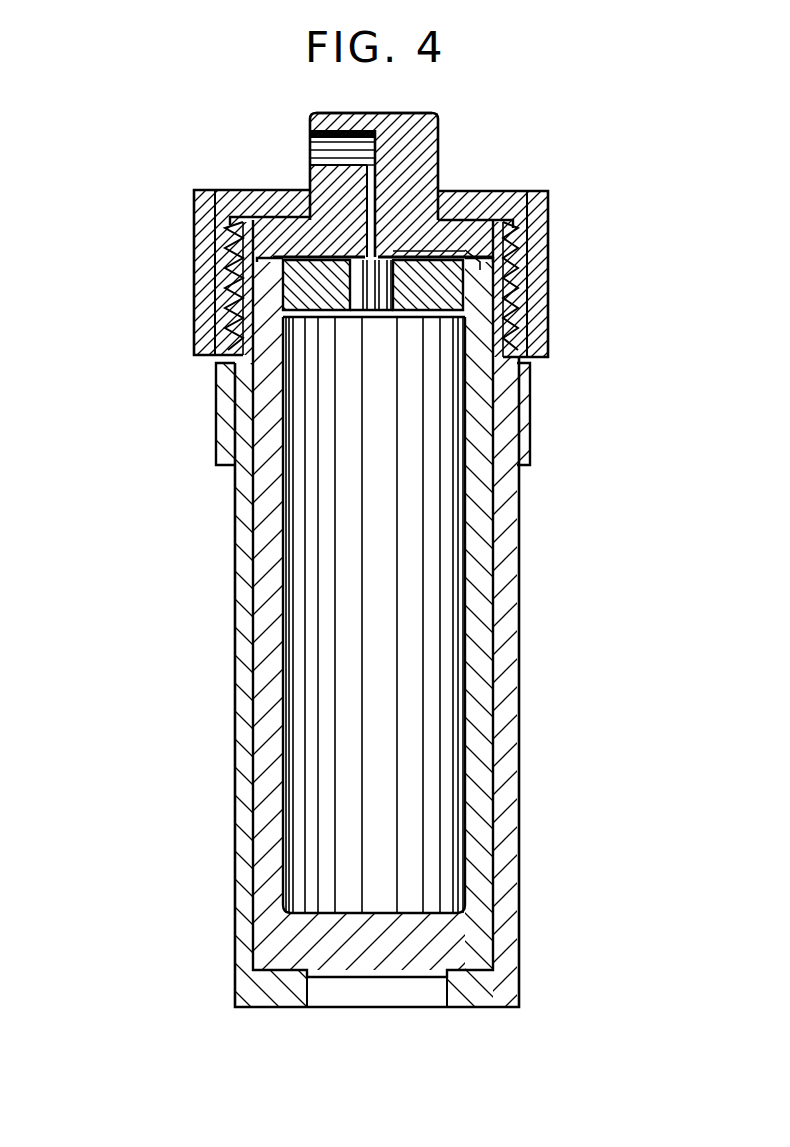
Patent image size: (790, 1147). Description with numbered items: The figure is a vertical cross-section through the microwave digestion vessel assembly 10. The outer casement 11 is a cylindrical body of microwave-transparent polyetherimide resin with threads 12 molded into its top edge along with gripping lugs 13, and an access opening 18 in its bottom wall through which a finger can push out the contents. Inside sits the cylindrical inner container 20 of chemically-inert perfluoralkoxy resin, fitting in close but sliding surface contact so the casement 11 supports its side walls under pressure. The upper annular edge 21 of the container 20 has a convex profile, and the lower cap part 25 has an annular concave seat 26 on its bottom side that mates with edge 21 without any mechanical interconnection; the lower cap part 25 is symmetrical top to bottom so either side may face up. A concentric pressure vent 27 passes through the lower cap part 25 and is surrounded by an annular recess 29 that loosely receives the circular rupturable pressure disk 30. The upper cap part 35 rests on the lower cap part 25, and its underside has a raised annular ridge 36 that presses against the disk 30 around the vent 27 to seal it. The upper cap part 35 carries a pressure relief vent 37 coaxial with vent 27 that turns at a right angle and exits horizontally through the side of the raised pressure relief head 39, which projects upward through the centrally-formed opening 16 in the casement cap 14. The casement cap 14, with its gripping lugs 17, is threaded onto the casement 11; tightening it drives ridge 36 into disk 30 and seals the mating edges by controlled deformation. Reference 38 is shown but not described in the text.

The vessel assembly 10 is at (208, 692).
The outer casement 11 is at (518, 645).
The threads 12 is at (540, 288).
The gripping lugs 13 is at (220, 453).
The casement cap 14 is at (263, 197).
The centrally-formed opening 16 is at (440, 165).
The gripping lugs 17 is at (203, 222).
The access opening 18 is at (447, 990).
The inner container 20 is at (480, 500).
The upper annular edge 21 is at (250, 343).
The lower cap part 25 is at (265, 283).
The annular concave seat 26 is at (228, 265).
The pressure vent 27 is at (488, 337).
The annular recess 29 is at (262, 205).
The pressure disk 30 is at (375, 300).
The upper cap part 35 is at (520, 237).
The annular ridge 36 is at (470, 250).
The pressure relief vent 37 is at (308, 137).
The seal lip 38 is at (480, 262).
The pressure relief head 39 is at (416, 113).